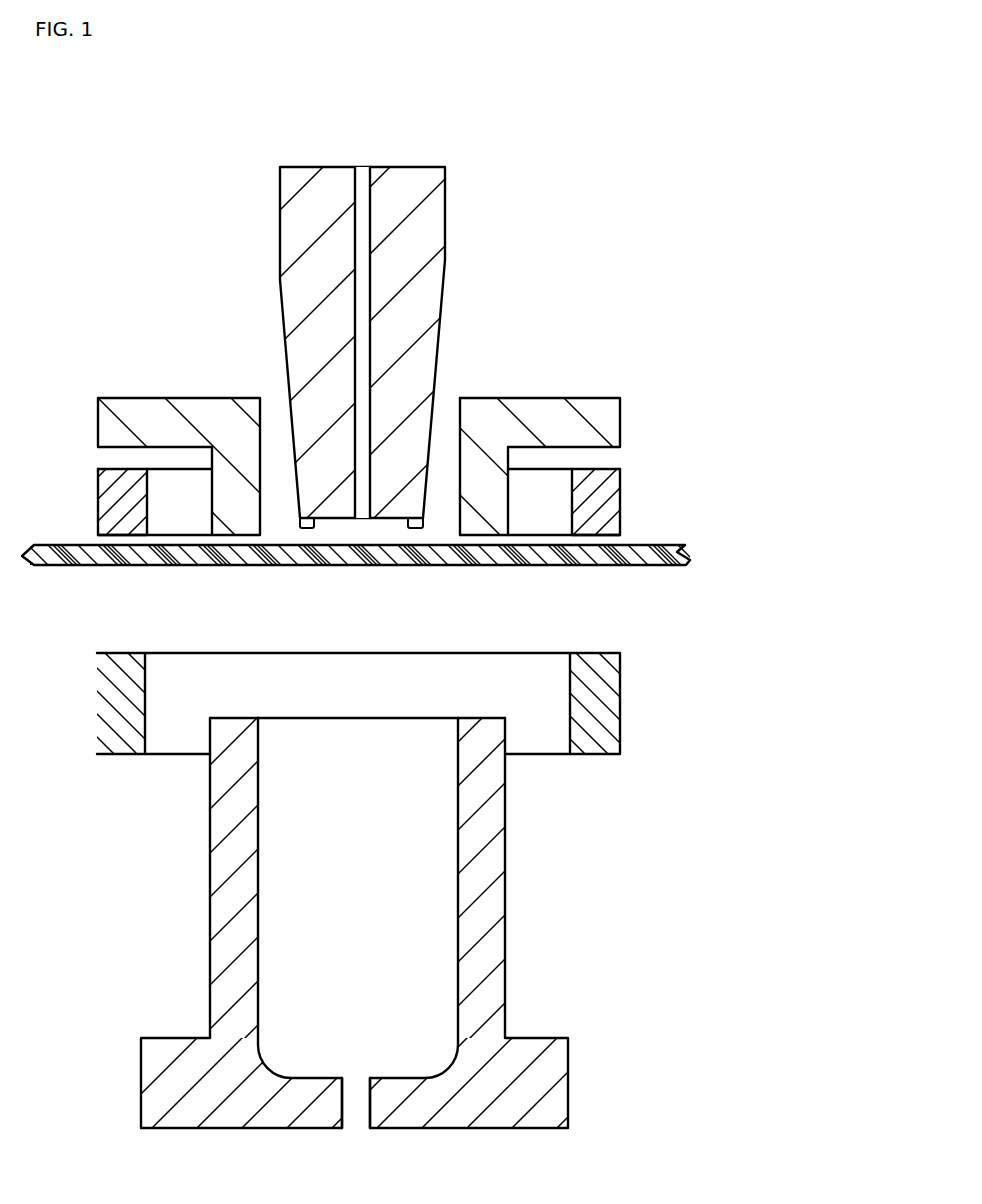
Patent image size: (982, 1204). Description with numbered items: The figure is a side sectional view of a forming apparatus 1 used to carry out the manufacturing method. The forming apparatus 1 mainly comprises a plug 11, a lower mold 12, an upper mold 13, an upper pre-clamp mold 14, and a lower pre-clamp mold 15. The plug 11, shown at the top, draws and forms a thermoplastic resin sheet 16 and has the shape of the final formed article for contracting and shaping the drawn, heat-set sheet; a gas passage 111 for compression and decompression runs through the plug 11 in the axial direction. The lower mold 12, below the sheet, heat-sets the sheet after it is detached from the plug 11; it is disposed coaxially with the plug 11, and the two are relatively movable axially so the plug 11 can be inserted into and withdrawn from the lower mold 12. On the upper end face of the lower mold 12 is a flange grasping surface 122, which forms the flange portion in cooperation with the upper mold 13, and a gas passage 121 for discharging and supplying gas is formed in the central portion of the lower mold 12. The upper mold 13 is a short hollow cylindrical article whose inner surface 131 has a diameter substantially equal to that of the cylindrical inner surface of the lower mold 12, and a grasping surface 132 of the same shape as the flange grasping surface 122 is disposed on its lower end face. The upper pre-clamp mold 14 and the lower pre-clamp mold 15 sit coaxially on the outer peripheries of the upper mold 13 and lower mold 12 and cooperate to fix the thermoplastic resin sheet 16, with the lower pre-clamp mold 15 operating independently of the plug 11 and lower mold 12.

The forming apparatus 1 is at (503, 182).
The plug 11 is at (446, 250).
The gas passage 111 is at (362, 347).
The upper mold 13 is at (620, 418).
The inner surface 131 is at (462, 420).
The grasping surface 132 is at (493, 541).
The upper pre-clamp mold 14 is at (622, 490).
The thermoplastic resin sheet 16 is at (68, 565).
The lower pre-clamp mold 15 is at (574, 655).
The lower mold 12 is at (505, 907).
The flange grasping surface 122 is at (467, 718).
The gas passage 121 is at (350, 1117).